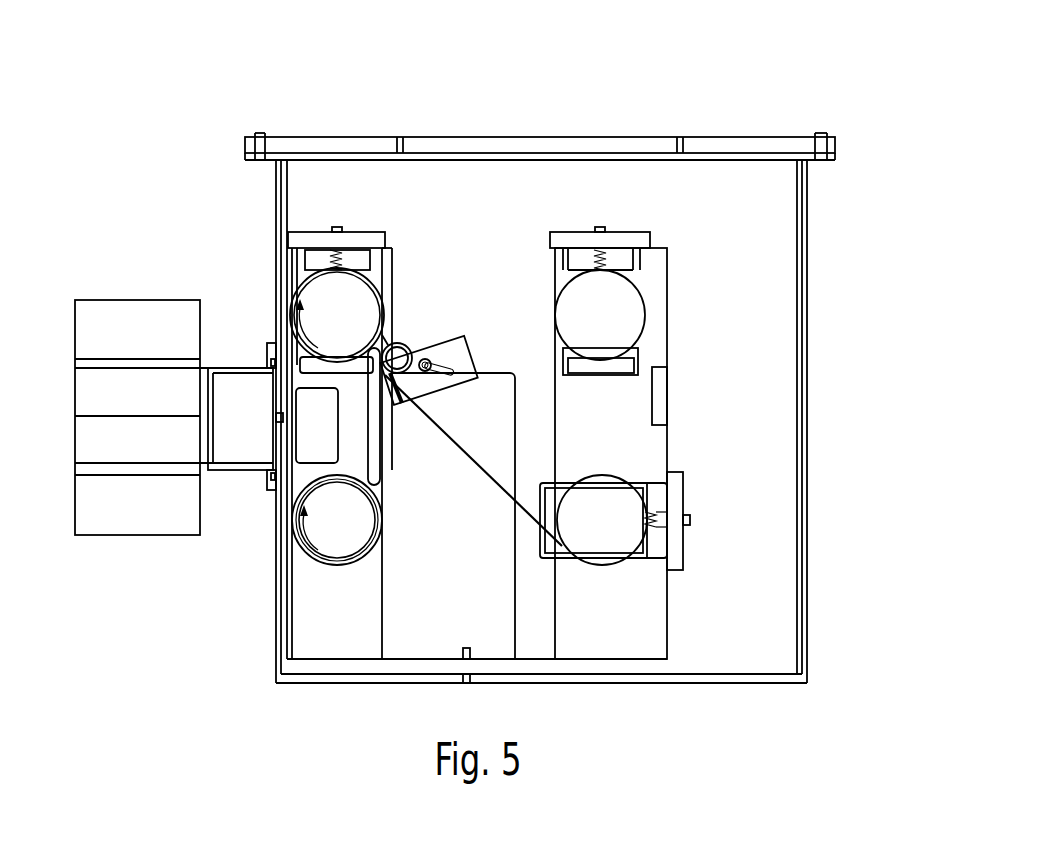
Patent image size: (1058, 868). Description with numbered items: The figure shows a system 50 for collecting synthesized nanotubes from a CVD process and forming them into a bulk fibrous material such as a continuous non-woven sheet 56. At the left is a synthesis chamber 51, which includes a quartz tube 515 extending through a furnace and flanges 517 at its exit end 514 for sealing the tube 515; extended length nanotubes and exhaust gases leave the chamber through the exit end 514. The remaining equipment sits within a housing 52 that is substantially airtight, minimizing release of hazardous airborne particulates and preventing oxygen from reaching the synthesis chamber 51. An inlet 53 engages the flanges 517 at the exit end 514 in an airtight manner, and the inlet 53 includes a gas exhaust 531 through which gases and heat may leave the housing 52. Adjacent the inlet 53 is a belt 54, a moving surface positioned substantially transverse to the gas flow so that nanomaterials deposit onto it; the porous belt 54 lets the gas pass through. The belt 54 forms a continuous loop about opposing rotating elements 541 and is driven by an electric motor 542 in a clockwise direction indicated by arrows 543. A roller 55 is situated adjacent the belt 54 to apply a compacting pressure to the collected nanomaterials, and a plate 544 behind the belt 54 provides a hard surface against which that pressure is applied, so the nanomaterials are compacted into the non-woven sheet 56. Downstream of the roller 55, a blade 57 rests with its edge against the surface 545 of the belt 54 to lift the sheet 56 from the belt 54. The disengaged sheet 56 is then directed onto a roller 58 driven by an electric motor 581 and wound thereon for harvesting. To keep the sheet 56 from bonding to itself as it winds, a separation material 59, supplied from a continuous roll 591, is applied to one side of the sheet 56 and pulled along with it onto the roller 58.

The system 50 is at (812, 85).
The synthesis chamber 51 is at (93, 275).
The exit end 514 is at (141, 293).
The quartz tube 515 is at (137, 537).
The flanges 517 is at (268, 343).
The housing 52 is at (430, 137).
The inlet 53 is at (305, 432).
The gas exhaust 531 is at (277, 420).
The belt 54 is at (445, 553).
The rotating elements 541 is at (310, 315).
The electric motor 542 is at (338, 548).
The arrows 543 is at (326, 424).
The plate 544 is at (375, 475).
The surface 545 is at (385, 337).
The roller 55 is at (412, 347).
The non-woven sheet 56 is at (447, 430).
The blade 57 is at (398, 375).
The roller 58 is at (580, 562).
The electric motor 581 is at (612, 537).
The separation material 59 is at (557, 388).
The continuous roll 591 is at (647, 305).